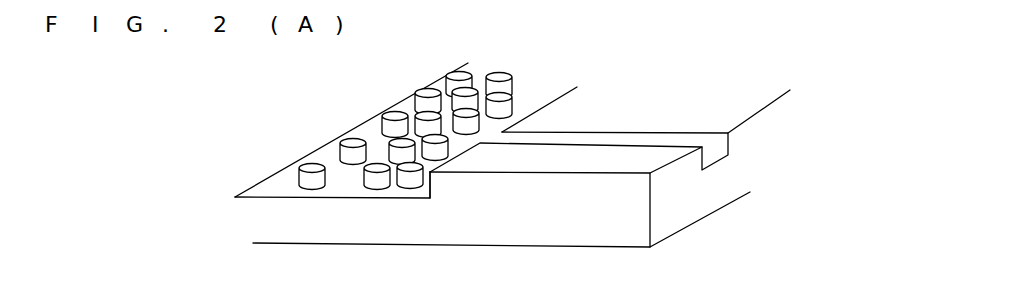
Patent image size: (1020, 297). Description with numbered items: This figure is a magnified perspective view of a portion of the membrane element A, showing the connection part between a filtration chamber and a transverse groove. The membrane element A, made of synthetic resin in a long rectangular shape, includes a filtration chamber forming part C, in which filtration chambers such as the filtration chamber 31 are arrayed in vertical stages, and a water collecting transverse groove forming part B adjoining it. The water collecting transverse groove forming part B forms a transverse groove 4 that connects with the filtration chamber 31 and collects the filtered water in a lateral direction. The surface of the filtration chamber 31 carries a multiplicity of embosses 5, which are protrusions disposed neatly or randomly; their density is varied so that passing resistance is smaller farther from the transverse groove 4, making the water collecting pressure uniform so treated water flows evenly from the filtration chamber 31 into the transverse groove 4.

The embosses 5 is at (422, 92).
The filtration chamber 31 is at (341, 191).
The transverse groove 4 is at (717, 142).
The membrane element A is at (680, 235).
The water collecting transverse groove forming part B is at (602, 160).
The filtration chamber forming part C is at (351, 179).